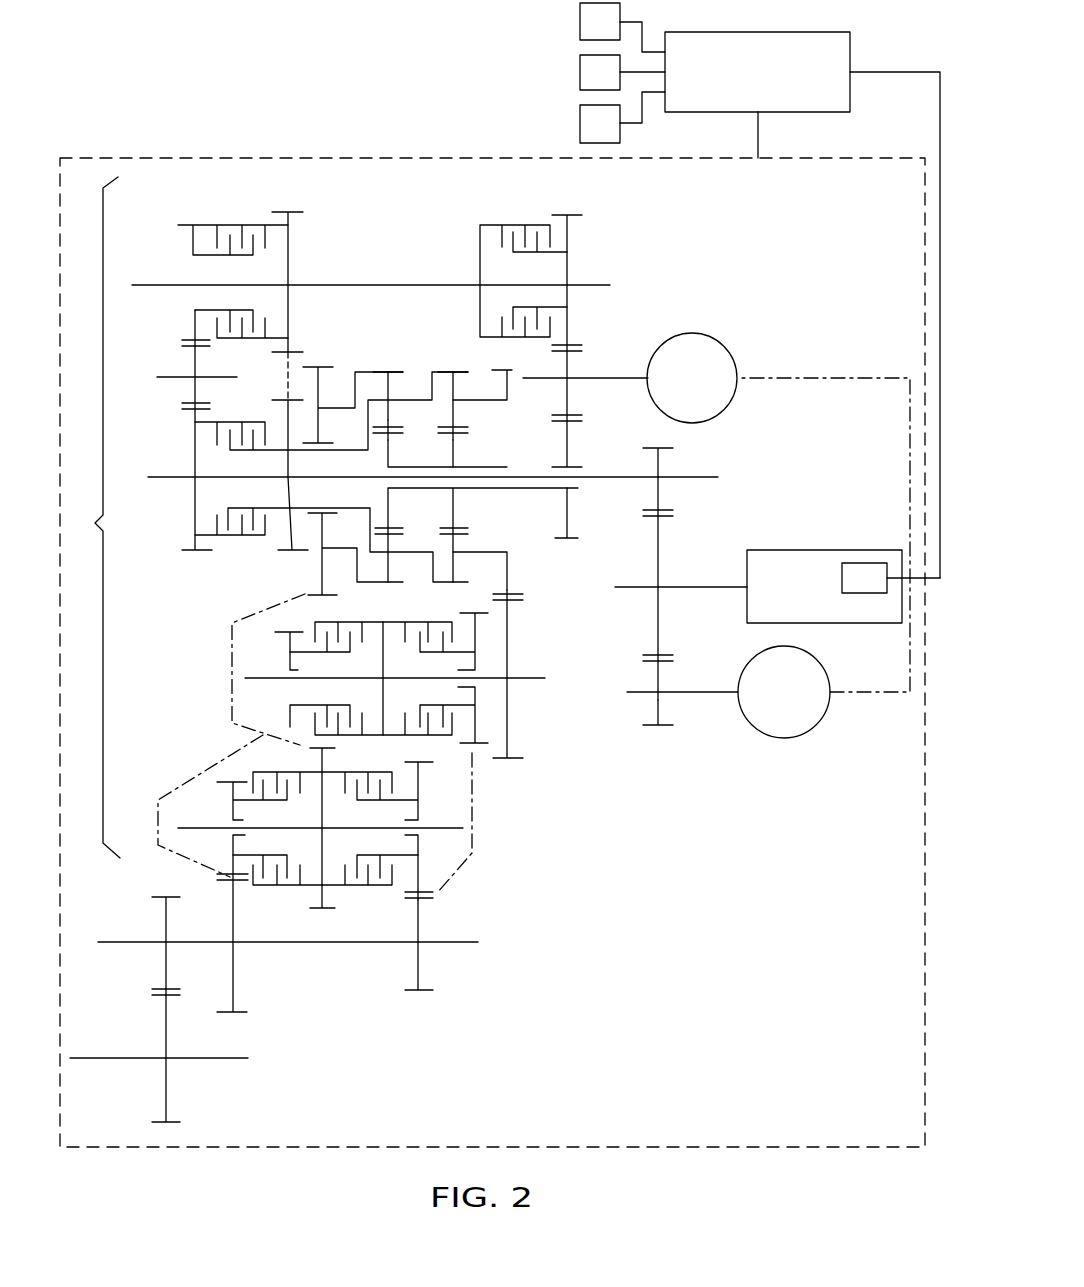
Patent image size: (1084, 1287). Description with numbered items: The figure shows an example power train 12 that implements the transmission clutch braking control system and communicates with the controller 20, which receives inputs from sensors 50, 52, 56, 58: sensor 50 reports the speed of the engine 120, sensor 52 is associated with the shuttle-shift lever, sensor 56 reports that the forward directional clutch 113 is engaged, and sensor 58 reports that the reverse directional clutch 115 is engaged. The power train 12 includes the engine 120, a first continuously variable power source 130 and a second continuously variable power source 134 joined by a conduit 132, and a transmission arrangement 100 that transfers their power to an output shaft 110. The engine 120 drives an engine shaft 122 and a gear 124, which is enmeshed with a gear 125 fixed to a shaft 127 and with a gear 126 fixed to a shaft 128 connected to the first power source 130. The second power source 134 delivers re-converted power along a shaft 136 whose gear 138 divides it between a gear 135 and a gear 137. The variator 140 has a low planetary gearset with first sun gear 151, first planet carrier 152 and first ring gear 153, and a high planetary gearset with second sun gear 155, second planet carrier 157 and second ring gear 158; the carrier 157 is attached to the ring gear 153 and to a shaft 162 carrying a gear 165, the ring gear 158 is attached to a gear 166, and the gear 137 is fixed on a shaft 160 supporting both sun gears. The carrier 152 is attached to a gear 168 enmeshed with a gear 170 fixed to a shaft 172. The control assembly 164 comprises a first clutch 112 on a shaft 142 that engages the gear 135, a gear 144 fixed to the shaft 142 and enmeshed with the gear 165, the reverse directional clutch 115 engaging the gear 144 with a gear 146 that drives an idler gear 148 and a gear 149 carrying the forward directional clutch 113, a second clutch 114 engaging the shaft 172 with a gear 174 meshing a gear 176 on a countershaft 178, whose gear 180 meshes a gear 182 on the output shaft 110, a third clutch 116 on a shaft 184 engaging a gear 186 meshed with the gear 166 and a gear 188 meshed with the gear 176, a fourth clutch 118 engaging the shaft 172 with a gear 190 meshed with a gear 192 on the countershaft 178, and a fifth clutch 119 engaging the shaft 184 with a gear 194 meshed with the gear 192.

The power train 12 is at (772, 1152).
The controller 20 is at (853, 52).
The sensor 50 is at (865, 594).
The sensor 52 is at (622, 27).
The sensor 56 is at (622, 72).
The sensor 58 is at (622, 117).
The transmission arrangement 100 is at (337, 192).
The output shaft 110 is at (203, 1058).
The first clutch 112 is at (512, 224).
The forward directional clutch 113 is at (230, 421).
The second clutch 114 is at (373, 622).
The reverse directional clutch 115 is at (233, 226).
The third clutch 116 is at (295, 887).
The fourth clutch 118 is at (393, 621).
The fifth clutch 119 is at (362, 887).
The engine 120 is at (863, 550).
The engine shaft 122 is at (733, 590).
The gear 124 is at (658, 572).
The gear 125 is at (658, 465).
The gear 126 is at (655, 705).
The shaft 127 is at (688, 478).
The shaft 128 is at (678, 688).
The first continuously variable power source 130 is at (820, 725).
The conduit 132 is at (822, 378).
The second continuously variable power source 134 is at (722, 343).
The gear 135 is at (568, 233).
The shaft 136 is at (588, 378).
The gear 137 is at (568, 513).
The gear 138 is at (568, 393).
The variator 140 is at (365, 357).
The shaft 142 is at (345, 284).
The gear 144 is at (290, 267).
The gear 146 is at (195, 322).
The idler gear 148 is at (195, 360).
The gear 149 is at (193, 467).
The first sun gear 151 is at (455, 447).
The first planet gears and associated carrier 152 is at (455, 408).
The first ring gear 153 is at (458, 368).
The second sun gear 155 is at (387, 447).
The second planet gears and associated carrier 157 is at (392, 405).
The second ring gear 158 is at (388, 368).
The shaft 160 is at (540, 490).
The shaft 162 is at (303, 508).
The control assembly 164 is at (92, 518).
The gear 165 is at (291, 528).
The gear 166 is at (318, 575).
The gear 168 is at (508, 575).
The gear 170 is at (509, 597).
The shaft 172 is at (540, 678).
The gear 174 is at (287, 640).
The gear 176 is at (232, 915).
The countershaft 178 is at (285, 943).
The gear 180 is at (165, 920).
The gear 182 is at (165, 1033).
The shaft 184 is at (437, 822).
The gear 186 is at (320, 795).
The gear 188 is at (232, 788).
The gear 190 is at (473, 735).
The gear 192 is at (422, 918).
The gear 194 is at (422, 873).